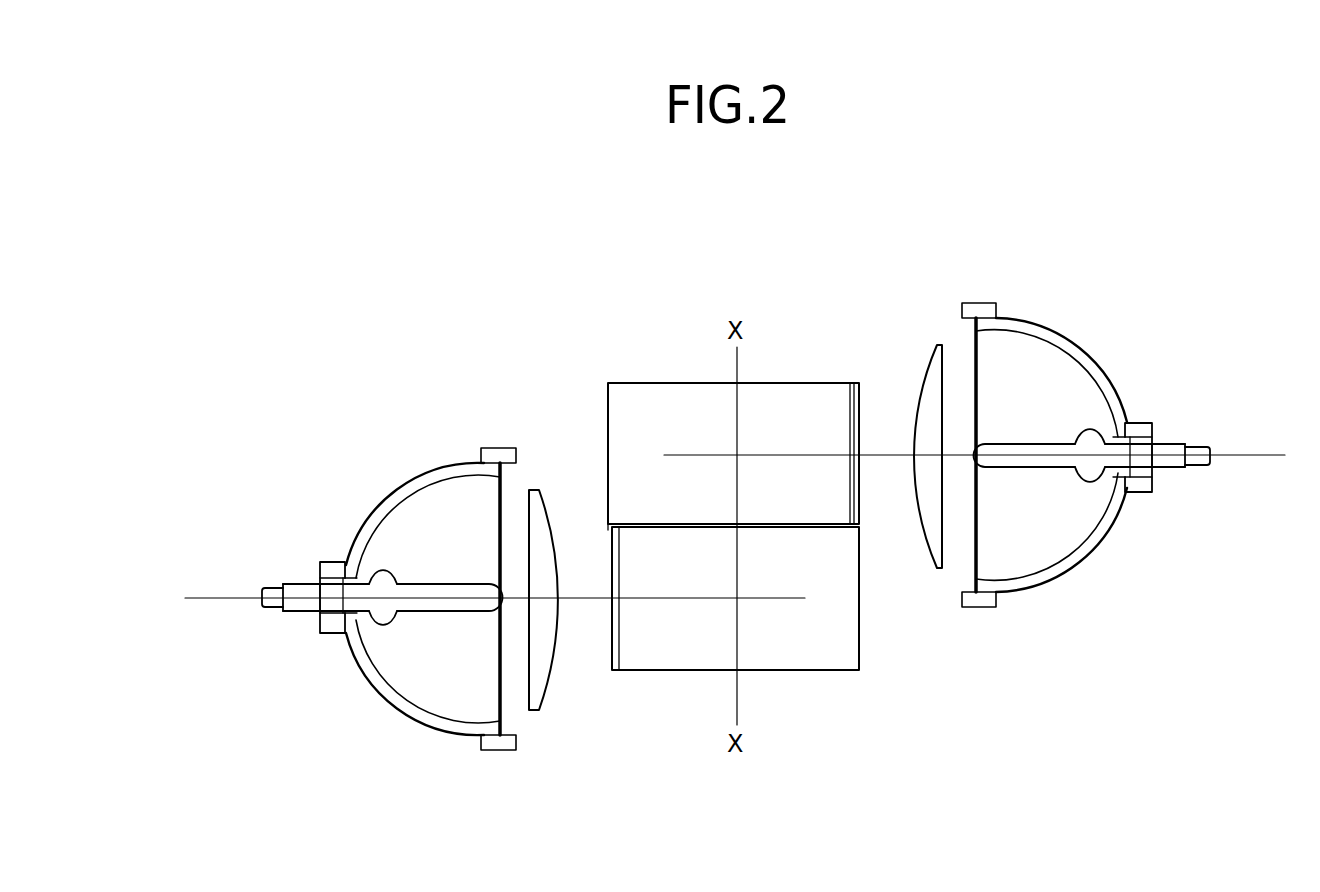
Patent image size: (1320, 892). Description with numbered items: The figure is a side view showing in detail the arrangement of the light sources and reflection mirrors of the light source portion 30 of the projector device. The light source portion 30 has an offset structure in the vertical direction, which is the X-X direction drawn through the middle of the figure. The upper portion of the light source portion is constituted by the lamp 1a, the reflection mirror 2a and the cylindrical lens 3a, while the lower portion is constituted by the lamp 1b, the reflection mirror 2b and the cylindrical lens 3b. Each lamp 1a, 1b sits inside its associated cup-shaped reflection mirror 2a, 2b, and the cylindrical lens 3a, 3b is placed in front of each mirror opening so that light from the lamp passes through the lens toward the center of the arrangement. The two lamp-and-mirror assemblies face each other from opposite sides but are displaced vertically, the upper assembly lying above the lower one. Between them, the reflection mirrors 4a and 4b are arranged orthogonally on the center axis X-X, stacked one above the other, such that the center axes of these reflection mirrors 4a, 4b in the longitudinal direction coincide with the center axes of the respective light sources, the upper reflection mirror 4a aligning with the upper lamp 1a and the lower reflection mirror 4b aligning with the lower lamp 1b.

The light source portion 30 is at (1153, 306).
The lamp 1a is at (1028, 470).
The lamp 1b is at (437, 609).
The reflection mirror 2a is at (1090, 548).
The reflection mirror 2b is at (374, 685).
The cylindrical lens 3a is at (925, 367).
The cylindrical lens 3b is at (537, 488).
The reflection mirror 4a is at (663, 382).
The reflection mirror 4b is at (668, 673).